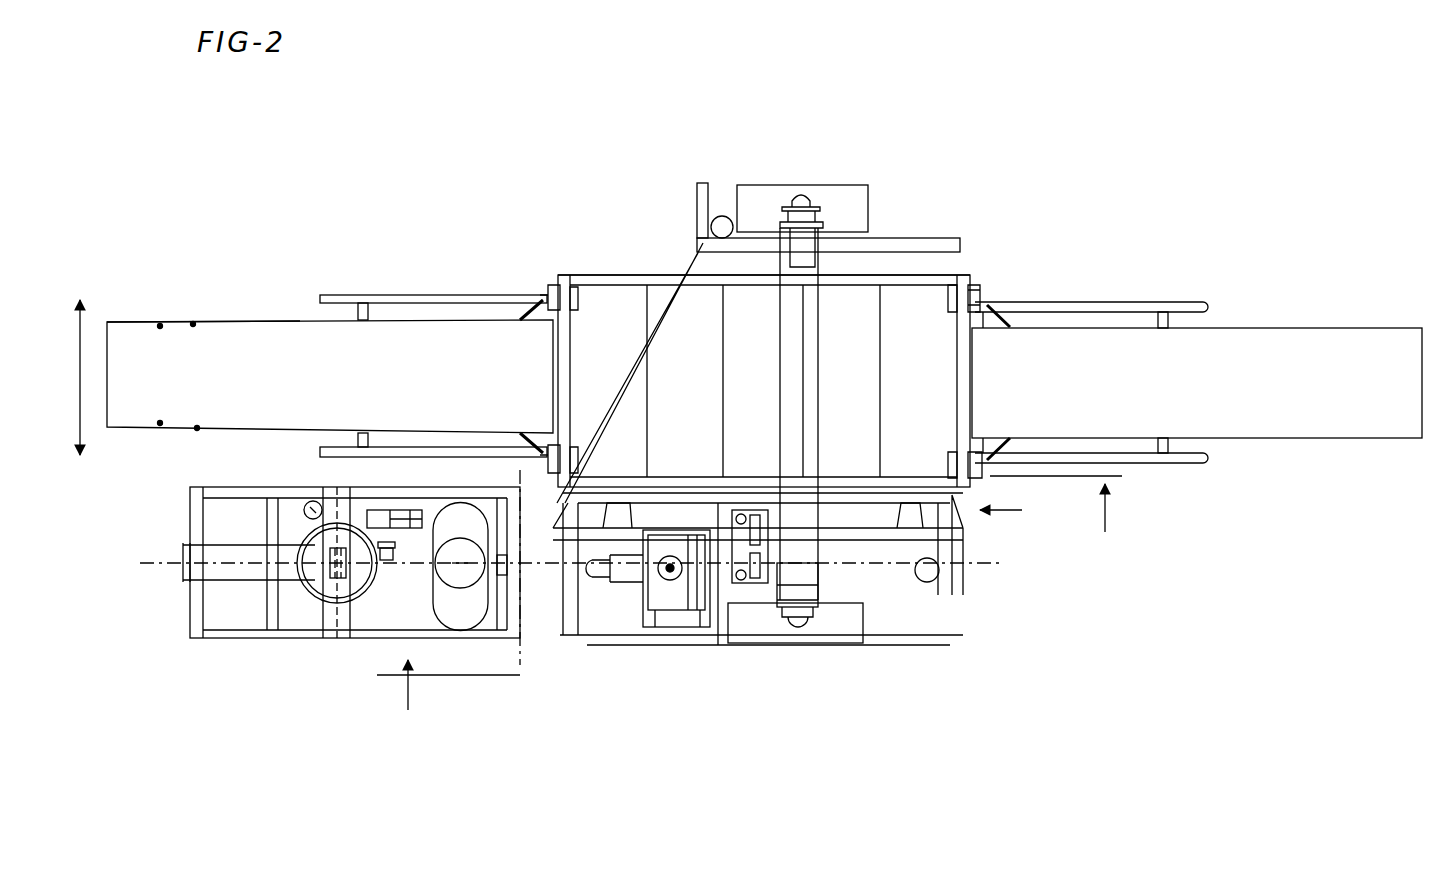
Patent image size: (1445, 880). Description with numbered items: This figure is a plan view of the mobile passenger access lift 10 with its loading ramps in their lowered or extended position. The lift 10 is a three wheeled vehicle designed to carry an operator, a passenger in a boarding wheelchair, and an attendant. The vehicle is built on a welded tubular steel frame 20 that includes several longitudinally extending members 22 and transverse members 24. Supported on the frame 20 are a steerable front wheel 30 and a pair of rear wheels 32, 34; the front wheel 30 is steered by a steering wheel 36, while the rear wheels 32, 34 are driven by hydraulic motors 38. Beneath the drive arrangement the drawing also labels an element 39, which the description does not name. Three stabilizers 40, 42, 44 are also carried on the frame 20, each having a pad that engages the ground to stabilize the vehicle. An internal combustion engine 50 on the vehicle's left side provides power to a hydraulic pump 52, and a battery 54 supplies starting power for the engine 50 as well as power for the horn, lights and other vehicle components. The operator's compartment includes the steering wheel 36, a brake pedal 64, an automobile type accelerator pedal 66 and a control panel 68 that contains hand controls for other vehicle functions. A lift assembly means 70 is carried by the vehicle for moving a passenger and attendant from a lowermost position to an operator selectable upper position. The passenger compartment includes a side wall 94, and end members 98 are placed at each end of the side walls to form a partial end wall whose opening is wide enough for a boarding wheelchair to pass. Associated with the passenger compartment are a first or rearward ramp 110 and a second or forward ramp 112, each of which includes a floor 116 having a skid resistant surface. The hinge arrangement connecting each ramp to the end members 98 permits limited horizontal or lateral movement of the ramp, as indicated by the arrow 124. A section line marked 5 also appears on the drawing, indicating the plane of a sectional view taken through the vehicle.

The mobile passenger access lift 10 is at (585, 176).
The frame 20 is at (215, 643).
The longitudinally extending members 22 is at (915, 242).
The transverse members 24 is at (688, 270).
The steerable front wheel 30 is at (205, 553).
The rear wheel 32 is at (825, 625).
The rear wheel 34 is at (775, 198).
The steering wheel 36 is at (325, 600).
The hydraulic motors 38 is at (805, 243).
The nut 39 is at (790, 600).
The stabilizer 40 is at (305, 503).
The stabilizer 42 is at (938, 575).
The stabilizer 44 is at (721, 216).
The internal combustion engine 50 is at (665, 595).
The hydraulic pump 52 is at (597, 585).
The battery 54 is at (778, 517).
The brake pedal 64 is at (388, 580).
The accelerator pedal 66 is at (400, 540).
The control panel 68 is at (347, 520).
The lift assembly means 70 is at (1028, 512).
The side wall 94 is at (622, 275).
The end members 98 is at (975, 283).
The rearward ramp 110 is at (1265, 325).
The forward ramp 112 is at (277, 301).
The ramp floor 116 is at (248, 340).
The arrow 124 is at (77, 293).
The section line 5- 5 is at (749, 611).